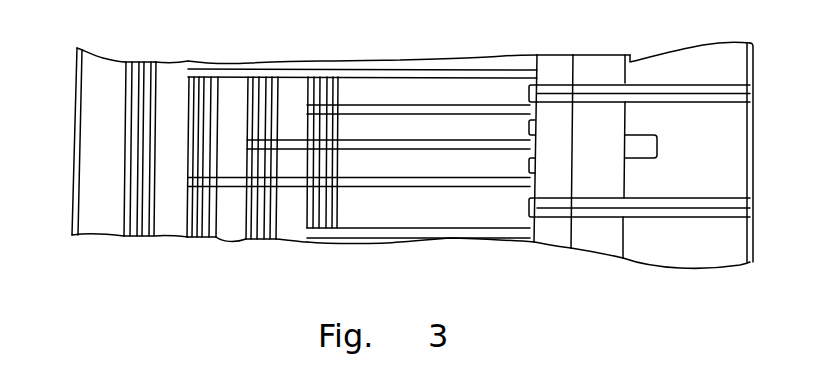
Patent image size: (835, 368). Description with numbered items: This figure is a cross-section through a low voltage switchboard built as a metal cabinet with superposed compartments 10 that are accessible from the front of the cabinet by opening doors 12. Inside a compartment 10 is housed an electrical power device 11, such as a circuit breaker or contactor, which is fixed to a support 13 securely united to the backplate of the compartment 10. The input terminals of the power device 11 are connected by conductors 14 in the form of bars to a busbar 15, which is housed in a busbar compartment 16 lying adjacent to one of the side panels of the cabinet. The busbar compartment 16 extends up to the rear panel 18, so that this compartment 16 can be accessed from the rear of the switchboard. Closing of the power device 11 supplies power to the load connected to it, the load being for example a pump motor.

The compartment 10 is at (733, 125).
The electrical power device 11 is at (602, 128).
The door 12 is at (753, 152).
The support 13 is at (552, 190).
The conductor 14 is at (392, 127).
The busbar 15 is at (143, 62).
The busbar compartment 16 is at (448, 206).
The rear panel 18 is at (72, 82).